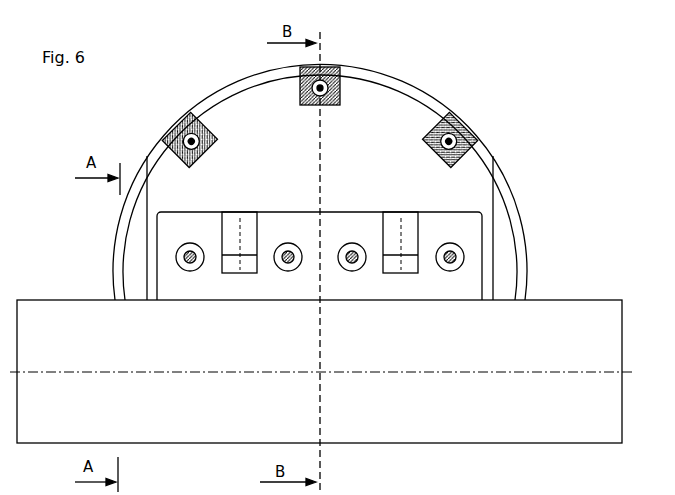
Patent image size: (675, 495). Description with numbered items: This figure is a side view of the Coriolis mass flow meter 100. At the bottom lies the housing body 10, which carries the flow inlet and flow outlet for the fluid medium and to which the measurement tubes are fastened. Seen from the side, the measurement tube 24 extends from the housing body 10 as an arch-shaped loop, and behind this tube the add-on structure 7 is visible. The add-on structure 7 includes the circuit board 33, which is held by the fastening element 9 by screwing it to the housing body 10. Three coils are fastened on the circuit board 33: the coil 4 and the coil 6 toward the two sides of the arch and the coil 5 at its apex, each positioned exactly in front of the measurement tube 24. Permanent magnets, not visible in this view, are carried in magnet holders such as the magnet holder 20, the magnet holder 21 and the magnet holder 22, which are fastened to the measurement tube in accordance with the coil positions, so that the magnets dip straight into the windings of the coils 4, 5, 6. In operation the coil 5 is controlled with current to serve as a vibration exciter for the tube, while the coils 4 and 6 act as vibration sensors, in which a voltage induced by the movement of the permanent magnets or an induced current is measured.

The Coriolis mass flow meter 100 is at (558, 102).
The housing body 10 is at (571, 324).
The fastening element 9 is at (180, 283).
The add-on structure 7 is at (503, 196).
The measurement tube 24 is at (517, 230).
The circuit board 33 is at (163, 188).
The coil 5 is at (329, 66).
The magnet holder 21 is at (302, 78).
The magnet holder 20 is at (192, 137).
The coil 4 is at (213, 133).
The coil 6 is at (450, 122).
The magnet holder 22 is at (468, 125).